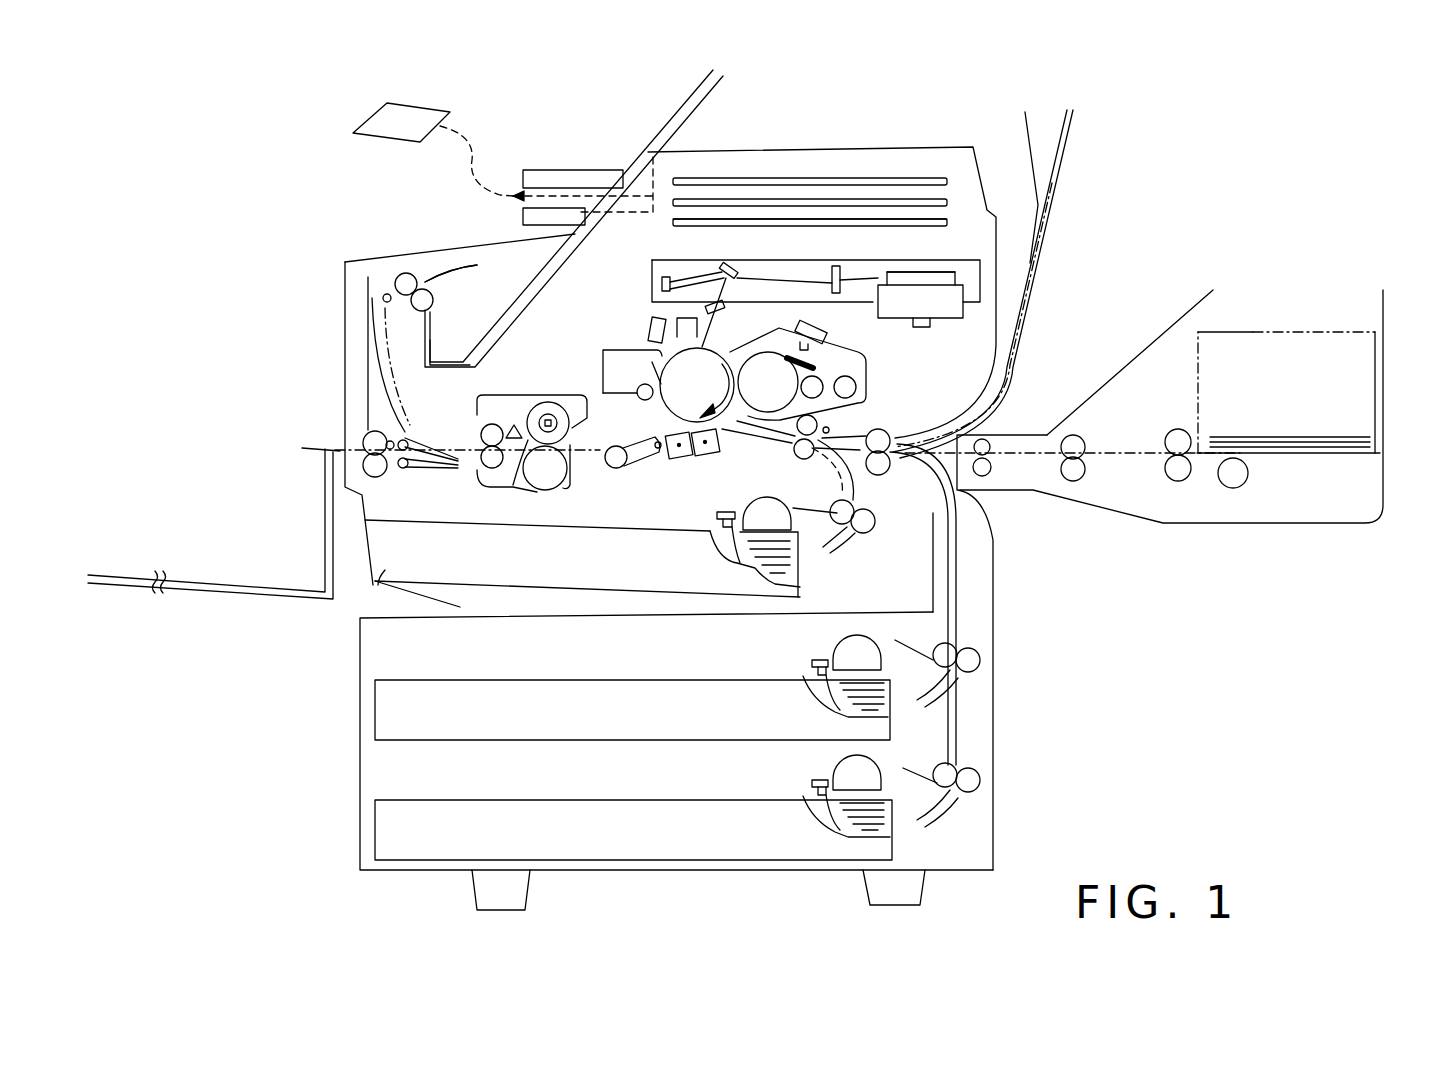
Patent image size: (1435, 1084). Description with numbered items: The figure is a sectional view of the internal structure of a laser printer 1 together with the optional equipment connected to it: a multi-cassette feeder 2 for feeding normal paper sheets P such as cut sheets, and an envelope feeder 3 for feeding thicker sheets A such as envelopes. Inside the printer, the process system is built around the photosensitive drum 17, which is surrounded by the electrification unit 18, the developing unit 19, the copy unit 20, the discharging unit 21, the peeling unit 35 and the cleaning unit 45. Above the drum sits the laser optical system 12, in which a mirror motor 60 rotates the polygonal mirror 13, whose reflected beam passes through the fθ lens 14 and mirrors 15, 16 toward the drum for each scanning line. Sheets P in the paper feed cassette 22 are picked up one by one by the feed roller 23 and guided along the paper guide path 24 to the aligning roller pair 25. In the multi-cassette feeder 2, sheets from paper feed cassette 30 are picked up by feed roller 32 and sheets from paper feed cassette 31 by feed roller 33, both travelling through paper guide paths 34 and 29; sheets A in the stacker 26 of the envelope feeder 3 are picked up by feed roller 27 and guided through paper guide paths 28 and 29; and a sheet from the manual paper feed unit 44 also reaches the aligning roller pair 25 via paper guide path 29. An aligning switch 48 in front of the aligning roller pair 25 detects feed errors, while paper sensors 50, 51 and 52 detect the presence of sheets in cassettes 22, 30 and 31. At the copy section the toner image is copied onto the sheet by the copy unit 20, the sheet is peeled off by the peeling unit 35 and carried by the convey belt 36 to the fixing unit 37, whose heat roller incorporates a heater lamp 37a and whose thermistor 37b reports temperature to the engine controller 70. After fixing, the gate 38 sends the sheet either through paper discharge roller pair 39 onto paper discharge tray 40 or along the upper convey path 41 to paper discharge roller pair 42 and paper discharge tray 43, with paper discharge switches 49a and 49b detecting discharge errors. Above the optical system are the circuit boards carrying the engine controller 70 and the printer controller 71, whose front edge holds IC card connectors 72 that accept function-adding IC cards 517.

The laser printer 1 is at (1040, 250).
The multi-cassette feeder 2 is at (997, 755).
The envelope feeder 3 is at (1165, 334).
The laser optical system 12 is at (950, 260).
The polygonal mirror 13 is at (905, 272).
The fθ lens 14 is at (836, 265).
The mirror 15 is at (665, 276).
The mirror 16 is at (729, 265).
The photosensitive drum 17 is at (720, 348).
The electrification unit 18 is at (702, 307).
The developing unit 19 is at (857, 353).
The copy unit 20 is at (705, 455).
The discharging unit 21 is at (650, 332).
The paper feed cassette 22 is at (378, 584).
The feed roller 23 is at (762, 502).
The paper guide path 24 is at (853, 489).
The aligning roller pair 25 is at (794, 450).
The stacker 26 is at (1293, 332).
The feed roller 27 is at (1240, 492).
The paper guide path 28 is at (962, 438).
The paper guide path 29 is at (895, 430).
The paper feed cassette 30 is at (592, 742).
The paper feed cassette 31 is at (440, 803).
The feed roller 32 is at (845, 645).
The feed roller 33 is at (868, 775).
The paper guide path 34 is at (935, 653).
The peeling unit 35 is at (674, 462).
The convey belt 36 is at (620, 470).
The fixing unit 37 is at (517, 394).
The heater lamp 37a is at (553, 405).
The thermistor 37b is at (523, 490).
The gate 38 is at (412, 443).
The paper discharge roller pair 39 is at (362, 446).
The paper discharge tray 40 is at (232, 600).
The upper convey path 41 is at (405, 365).
The paper discharge roller pair 42 is at (434, 298).
The paper discharge tray 43 is at (665, 128).
The manual paper feed unit 44 is at (1075, 113).
The cleaning unit 45 is at (600, 352).
The aligning switch 48 is at (835, 420).
The paper discharge switch 49a is at (400, 273).
The paper discharge switch 49b is at (384, 472).
The paper sensor 50 is at (728, 511).
The paper sensor 51 is at (808, 662).
The paper sensor 52 is at (812, 780).
The mirror motor 60 is at (928, 312).
The engine controller 70 is at (738, 177).
The printer controller 71 is at (668, 222).
The IC card connector 72 is at (646, 194).
The IC card 517 is at (432, 110).
The paper sheet P is at (1060, 186).
The paper sheet A is at (1316, 453).